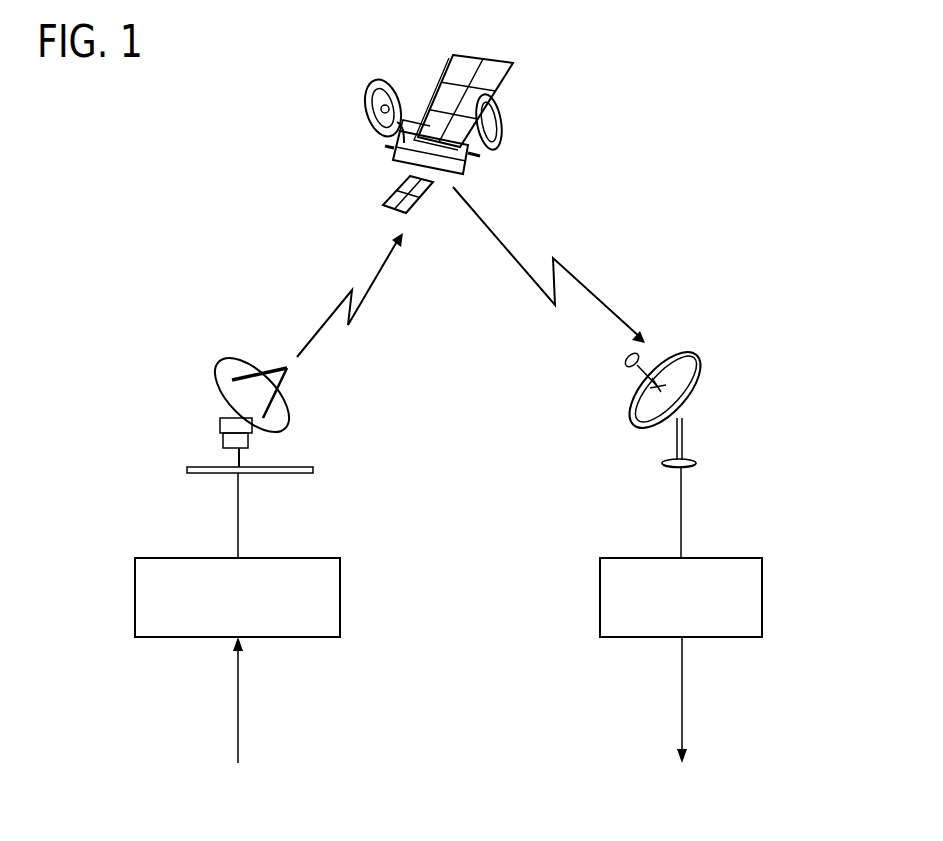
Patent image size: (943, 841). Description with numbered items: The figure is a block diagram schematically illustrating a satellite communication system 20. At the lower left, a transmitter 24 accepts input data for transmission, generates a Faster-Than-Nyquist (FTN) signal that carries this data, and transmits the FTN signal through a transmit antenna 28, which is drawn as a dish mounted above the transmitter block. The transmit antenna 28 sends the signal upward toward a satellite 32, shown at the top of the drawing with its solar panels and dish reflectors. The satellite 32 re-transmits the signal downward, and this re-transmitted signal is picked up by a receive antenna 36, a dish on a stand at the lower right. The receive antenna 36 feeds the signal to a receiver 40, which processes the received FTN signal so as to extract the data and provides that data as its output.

The satellite communication system 20 is at (671, 171).
The transmitter 24 is at (340, 593).
The transmit antenna 28 is at (217, 380).
The satellite 32 is at (513, 111).
The receive antenna 36 is at (701, 356).
The receiver 40 is at (600, 601).